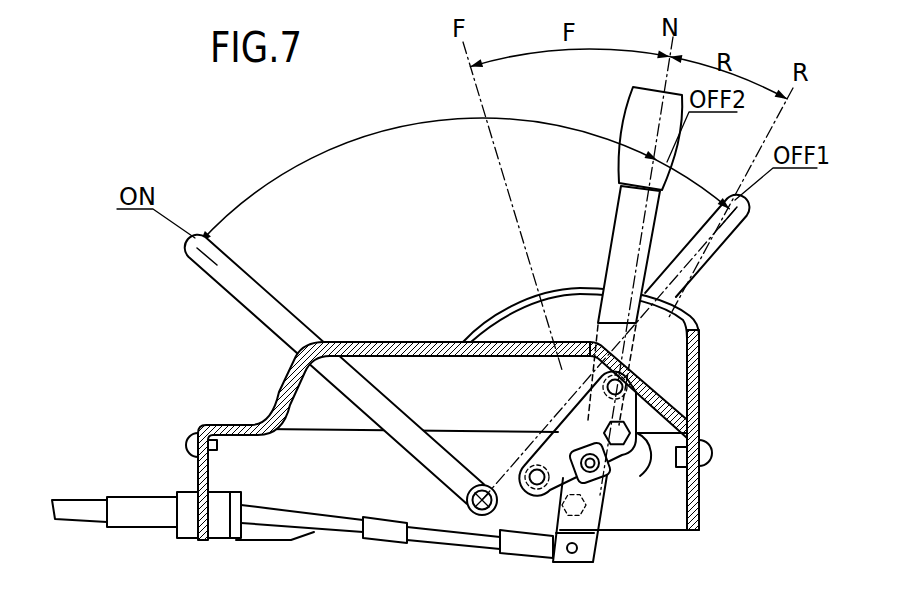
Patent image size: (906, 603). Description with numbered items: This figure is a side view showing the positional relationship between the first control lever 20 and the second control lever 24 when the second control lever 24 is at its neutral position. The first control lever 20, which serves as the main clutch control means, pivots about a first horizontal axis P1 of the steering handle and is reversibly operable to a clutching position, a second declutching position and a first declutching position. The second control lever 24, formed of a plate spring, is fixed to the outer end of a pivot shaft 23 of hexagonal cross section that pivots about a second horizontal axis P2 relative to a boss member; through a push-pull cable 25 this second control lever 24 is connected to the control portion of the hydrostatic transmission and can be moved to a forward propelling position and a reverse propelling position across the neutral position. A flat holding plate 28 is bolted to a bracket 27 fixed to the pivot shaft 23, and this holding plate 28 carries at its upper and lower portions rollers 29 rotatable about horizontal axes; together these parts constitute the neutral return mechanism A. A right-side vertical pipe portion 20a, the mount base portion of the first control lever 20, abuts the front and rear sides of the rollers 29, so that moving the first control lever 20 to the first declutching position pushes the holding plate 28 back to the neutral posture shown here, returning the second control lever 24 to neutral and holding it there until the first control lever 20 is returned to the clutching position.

The first control lever 20 is at (459, 349).
The right-side vertical pipe portion 20a is at (355, 398).
The pivot shaft 23 is at (613, 455).
The second control lever 24 is at (633, 103).
The push-pull cable 25 is at (85, 500).
The bracket 27 is at (609, 508).
The holding plate 28 is at (558, 431).
The rollers 29 is at (604, 386).
The first horizontal axis P1 is at (466, 501).
The second horizontal axis P2 is at (607, 473).
The neutral return mechanism A is at (646, 404).